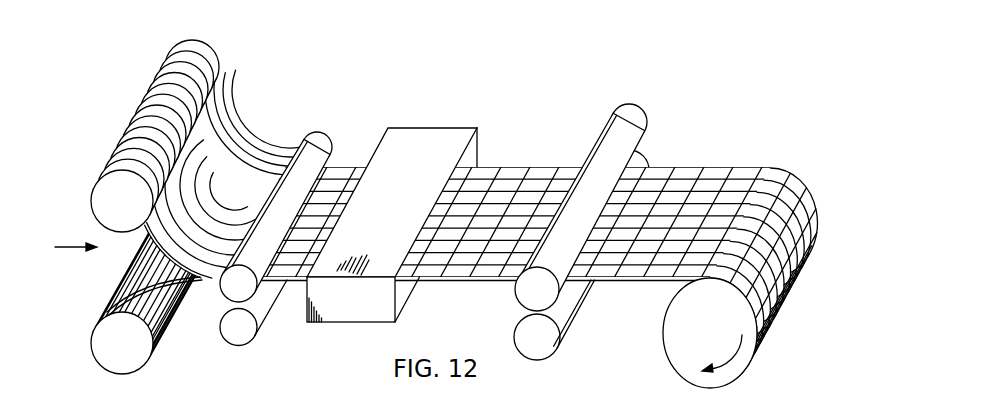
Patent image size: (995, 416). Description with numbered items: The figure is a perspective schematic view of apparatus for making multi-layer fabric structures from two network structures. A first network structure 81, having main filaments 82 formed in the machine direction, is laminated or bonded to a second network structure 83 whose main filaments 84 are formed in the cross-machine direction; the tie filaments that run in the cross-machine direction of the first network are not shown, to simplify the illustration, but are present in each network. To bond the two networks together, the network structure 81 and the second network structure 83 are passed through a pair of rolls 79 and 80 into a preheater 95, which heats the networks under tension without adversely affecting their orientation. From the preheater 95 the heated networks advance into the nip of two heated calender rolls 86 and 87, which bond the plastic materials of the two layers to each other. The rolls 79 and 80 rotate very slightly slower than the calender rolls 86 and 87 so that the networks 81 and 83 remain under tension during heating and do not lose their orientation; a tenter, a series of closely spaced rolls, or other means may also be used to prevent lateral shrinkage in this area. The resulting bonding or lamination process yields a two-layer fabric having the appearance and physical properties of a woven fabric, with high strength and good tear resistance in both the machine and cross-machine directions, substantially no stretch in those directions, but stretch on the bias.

The roll 79 is at (325, 146).
The roll 80 is at (251, 337).
The network structure 81 is at (231, 128).
The main filaments 82 is at (257, 158).
The second network structure 83 is at (178, 298).
The main filaments 84 is at (134, 283).
The heated calender roll 86 is at (525, 292).
The heated calender roll 87 is at (530, 333).
The preheater 95 is at (477, 129).